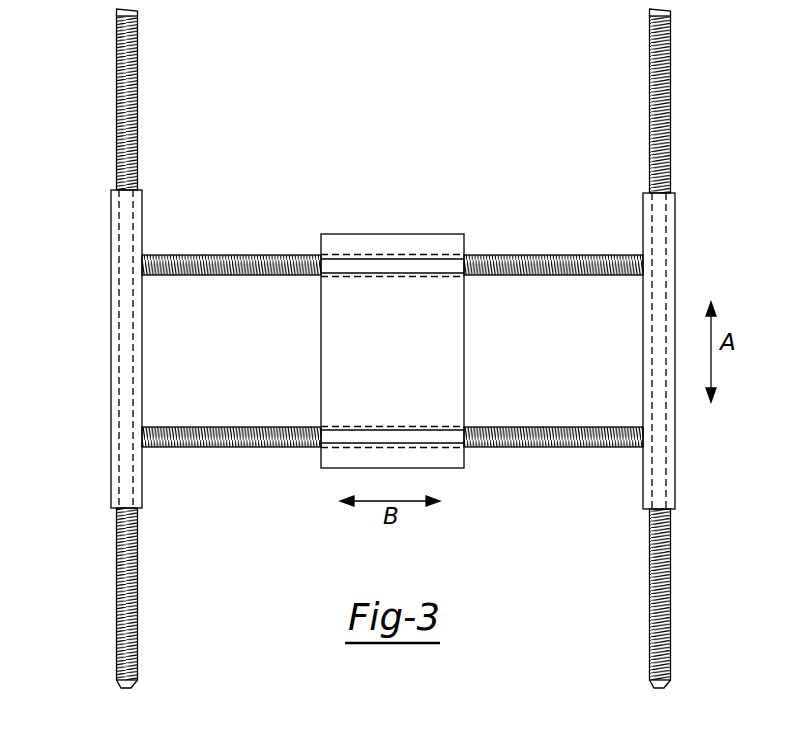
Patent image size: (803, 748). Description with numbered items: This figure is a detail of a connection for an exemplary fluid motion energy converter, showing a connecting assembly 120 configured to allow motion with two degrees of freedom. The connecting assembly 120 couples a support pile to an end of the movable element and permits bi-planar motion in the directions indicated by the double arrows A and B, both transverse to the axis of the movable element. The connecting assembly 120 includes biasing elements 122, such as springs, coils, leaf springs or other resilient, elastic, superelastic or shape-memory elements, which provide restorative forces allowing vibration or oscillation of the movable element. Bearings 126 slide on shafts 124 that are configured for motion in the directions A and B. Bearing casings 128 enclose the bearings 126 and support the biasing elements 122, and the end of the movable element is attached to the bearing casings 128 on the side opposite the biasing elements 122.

The connecting assembly 120 is at (474, 134).
The biasing elements 122 is at (137, 98).
The shafts 124 is at (125, 217).
The bearings 126 is at (118, 350).
The bearing casings 128 is at (432, 303).